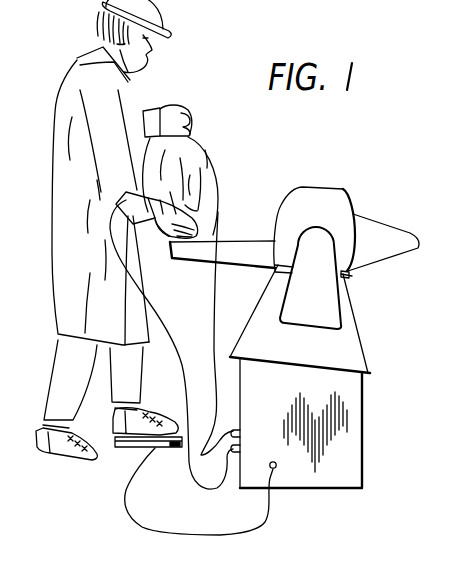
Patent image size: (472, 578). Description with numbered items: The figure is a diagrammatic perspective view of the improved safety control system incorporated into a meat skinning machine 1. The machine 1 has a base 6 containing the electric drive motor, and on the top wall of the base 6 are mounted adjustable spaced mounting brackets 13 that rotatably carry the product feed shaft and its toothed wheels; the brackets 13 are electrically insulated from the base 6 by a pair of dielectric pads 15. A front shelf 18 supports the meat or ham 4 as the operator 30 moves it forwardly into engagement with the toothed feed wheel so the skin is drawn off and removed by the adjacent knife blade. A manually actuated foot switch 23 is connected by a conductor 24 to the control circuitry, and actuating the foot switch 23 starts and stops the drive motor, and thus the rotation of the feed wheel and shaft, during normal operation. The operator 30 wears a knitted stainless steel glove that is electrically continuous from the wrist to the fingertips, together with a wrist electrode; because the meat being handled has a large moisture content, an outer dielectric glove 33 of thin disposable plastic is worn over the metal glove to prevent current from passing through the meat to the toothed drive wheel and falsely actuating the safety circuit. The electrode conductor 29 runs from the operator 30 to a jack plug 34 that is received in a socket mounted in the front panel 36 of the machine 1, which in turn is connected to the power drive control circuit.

The meat skinning machine 1 is at (368, 336).
The ham 4 is at (197, 170).
The base 6 is at (314, 478).
The mounting brackets 13 is at (321, 200).
The dielectric pads 15 is at (345, 276).
The front shelf 18 is at (248, 240).
The foot switch 23 is at (122, 449).
The conductor 24 is at (152, 525).
The conductor 29 is at (157, 111).
The operator 30 is at (68, 102).
The dielectric glove 33 is at (148, 222).
The jack plug 34 is at (235, 431).
The front panel 36 is at (236, 480).